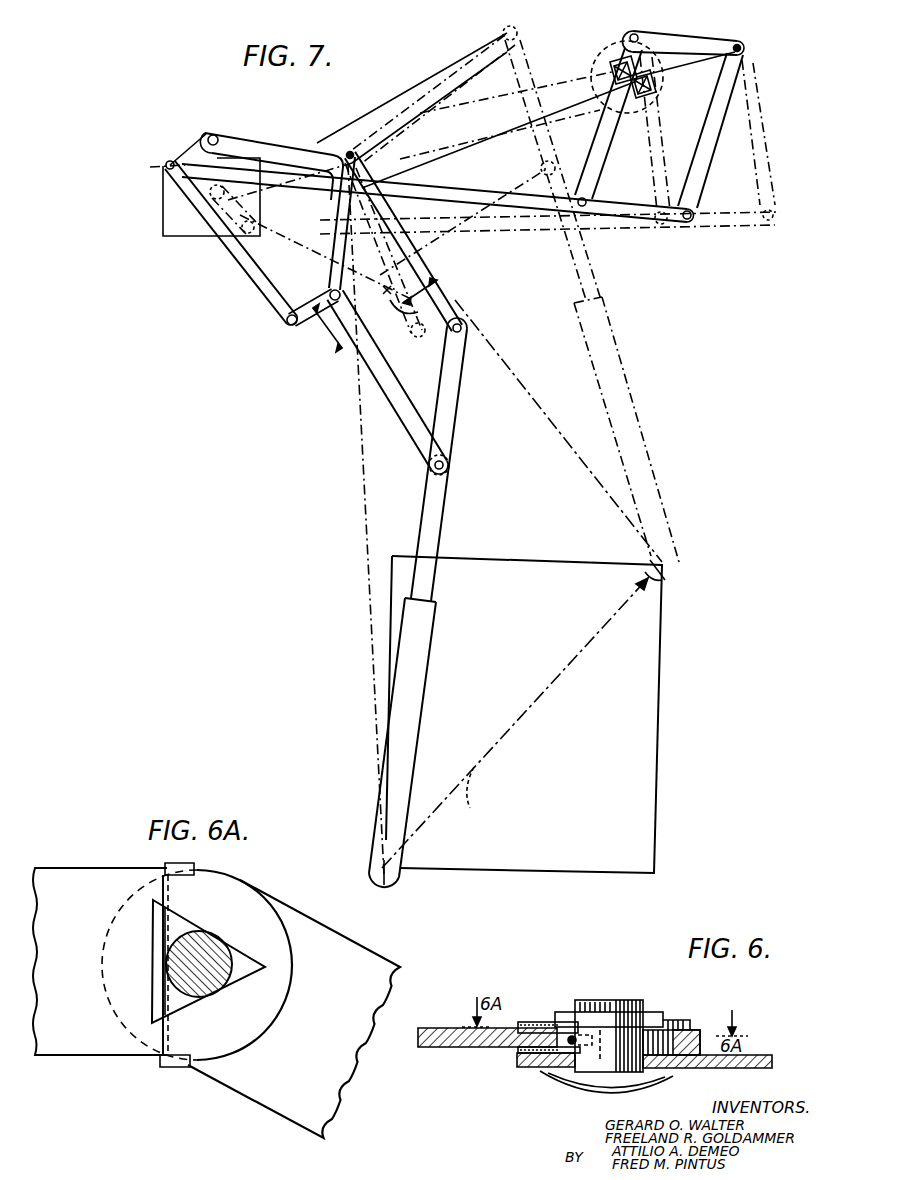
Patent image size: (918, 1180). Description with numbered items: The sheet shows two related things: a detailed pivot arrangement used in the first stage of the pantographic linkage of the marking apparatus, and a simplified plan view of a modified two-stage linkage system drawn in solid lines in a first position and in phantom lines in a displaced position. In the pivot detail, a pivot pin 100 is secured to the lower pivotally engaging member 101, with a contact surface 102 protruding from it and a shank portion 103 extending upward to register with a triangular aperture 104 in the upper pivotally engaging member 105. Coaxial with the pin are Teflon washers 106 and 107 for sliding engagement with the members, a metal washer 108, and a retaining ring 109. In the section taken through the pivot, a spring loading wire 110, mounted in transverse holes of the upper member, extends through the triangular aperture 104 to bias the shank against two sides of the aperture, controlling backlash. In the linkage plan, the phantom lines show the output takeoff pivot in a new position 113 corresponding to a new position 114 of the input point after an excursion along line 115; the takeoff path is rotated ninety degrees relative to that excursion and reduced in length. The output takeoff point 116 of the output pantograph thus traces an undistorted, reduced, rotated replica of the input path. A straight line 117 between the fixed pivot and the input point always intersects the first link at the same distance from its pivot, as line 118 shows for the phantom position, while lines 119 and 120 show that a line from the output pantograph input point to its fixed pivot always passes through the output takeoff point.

In FIG. 6, the pivot pin 100 is at (642, 1003).
In FIG. 6A, the lower pivotally engaging member 101 is at (280, 1105).
In FIG. 6, the lower pivotally engaging member 101 is at (770, 1064).
In FIG. 6, the contact surface 102 is at (658, 1080).
In FIG. 6A, the shank portion 103 is at (208, 948).
In FIG. 6, the shank portion 103 is at (593, 1060).
In FIG. 6A, the triangular aperture 104 is at (240, 960).
In FIG. 6, the triangular aperture 104 is at (672, 1036).
In FIG. 6A, the upper pivotally engaging member 105 is at (83, 872).
In FIG. 6, the upper pivotally engaging member 105 is at (450, 1048).
In FIG. 6, the Teflon washer 106 is at (520, 1022).
In FIG. 6, the Teflon washer 107 is at (520, 1058).
In FIG. 6, the metal washer 108 is at (553, 1012).
In FIG. 6, the retaining ring 109 is at (600, 1012).
In FIG. 6A, the spring loading wire 110 is at (172, 1010).
In FIG. 6, the spring loading wire 110 is at (533, 1064).
In FIG. 7, the new position of pivot 83' 113 is at (240, 248).
In FIG. 7, the new position of the input point 114 is at (670, 570).
In FIG. 7, the line of excursion 115 is at (515, 723).
In FIG. 7, the output takeoff point 116 is at (610, 62).
In FIG. 7, the straight line 117 is at (370, 676).
In FIG. 7, the line (phantom position) 118 is at (583, 468).
In FIG. 7, the line 119 is at (490, 100).
In FIG. 7, the line 120 is at (480, 145).